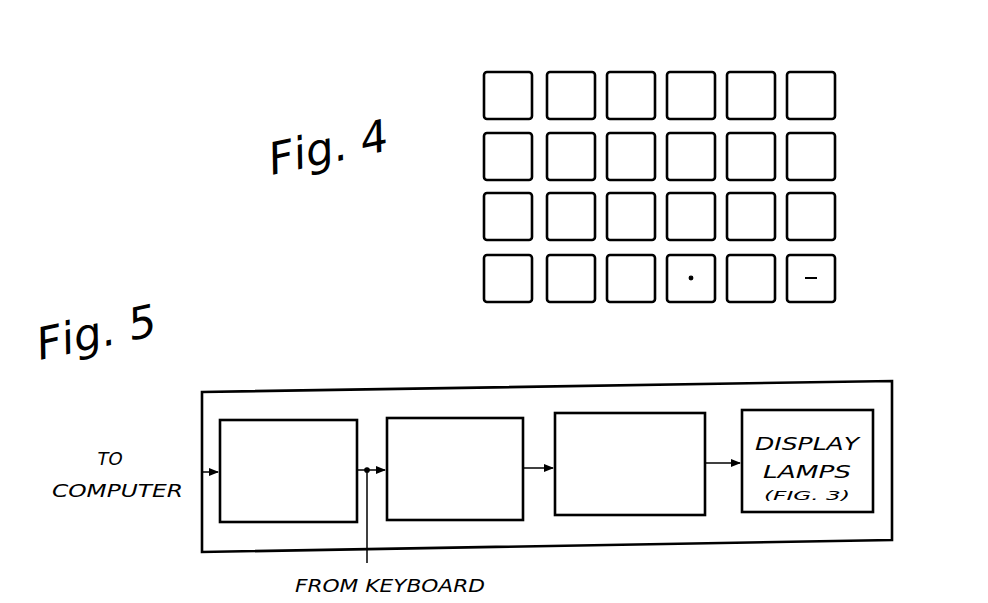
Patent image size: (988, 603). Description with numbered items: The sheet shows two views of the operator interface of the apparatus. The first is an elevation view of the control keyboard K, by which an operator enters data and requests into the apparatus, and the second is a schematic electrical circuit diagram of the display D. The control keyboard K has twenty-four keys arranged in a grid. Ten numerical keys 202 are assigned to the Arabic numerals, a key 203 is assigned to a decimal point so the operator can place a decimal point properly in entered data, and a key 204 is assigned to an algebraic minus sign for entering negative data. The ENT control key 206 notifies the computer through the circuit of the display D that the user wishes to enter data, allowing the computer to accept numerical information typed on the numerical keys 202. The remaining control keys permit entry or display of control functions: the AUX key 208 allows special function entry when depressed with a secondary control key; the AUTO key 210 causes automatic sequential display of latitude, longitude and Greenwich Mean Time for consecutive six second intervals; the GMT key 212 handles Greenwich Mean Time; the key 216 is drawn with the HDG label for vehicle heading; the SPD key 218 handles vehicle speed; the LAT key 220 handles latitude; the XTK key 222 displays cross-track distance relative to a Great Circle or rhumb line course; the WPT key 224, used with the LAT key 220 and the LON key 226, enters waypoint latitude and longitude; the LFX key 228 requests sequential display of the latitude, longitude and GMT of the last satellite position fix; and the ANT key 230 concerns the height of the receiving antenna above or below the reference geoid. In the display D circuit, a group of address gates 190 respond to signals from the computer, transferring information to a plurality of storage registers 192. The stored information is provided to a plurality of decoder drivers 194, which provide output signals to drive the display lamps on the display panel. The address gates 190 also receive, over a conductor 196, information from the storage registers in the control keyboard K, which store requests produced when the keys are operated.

In FIG. 4, the numerical keys 202 is at (719, 66).
In FIG. 4, the decimal point key 203 is at (697, 302).
In FIG. 4, the minus sign key 204 is at (810, 302).
In FIG. 4, the ENT control key 206 is at (560, 72).
In FIG. 4, the AUX key 208 is at (500, 72).
In FIG. 4, the AUTO key 210 is at (484, 160).
In FIG. 4, the GMT key 212 is at (484, 200).
In FIG. 4, the HDG key 216 is at (484, 268).
In FIG. 4, the SPD key 218 is at (576, 302).
In FIG. 4, the LAT key 220 is at (553, 240).
In FIG. 4, the XTK key 222 is at (556, 128).
In FIG. 4, the WPT key 224 is at (625, 72).
In FIG. 4, the LON key 226 is at (640, 240).
In FIG. 4, the LFX key 228 is at (645, 133).
In FIG. 4, the ANT key 230 is at (633, 302).
In FIG. 4, the control keyboard K is at (470, 146).
In FIG. 5, the display D is at (345, 391).
In FIG. 5, the address gates 190 is at (288, 419).
In FIG. 5, the storage registers 192 is at (428, 417).
In FIG. 5, the decoder drivers 194 is at (641, 412).
In FIG. 5, the conductor 196 is at (369, 562).